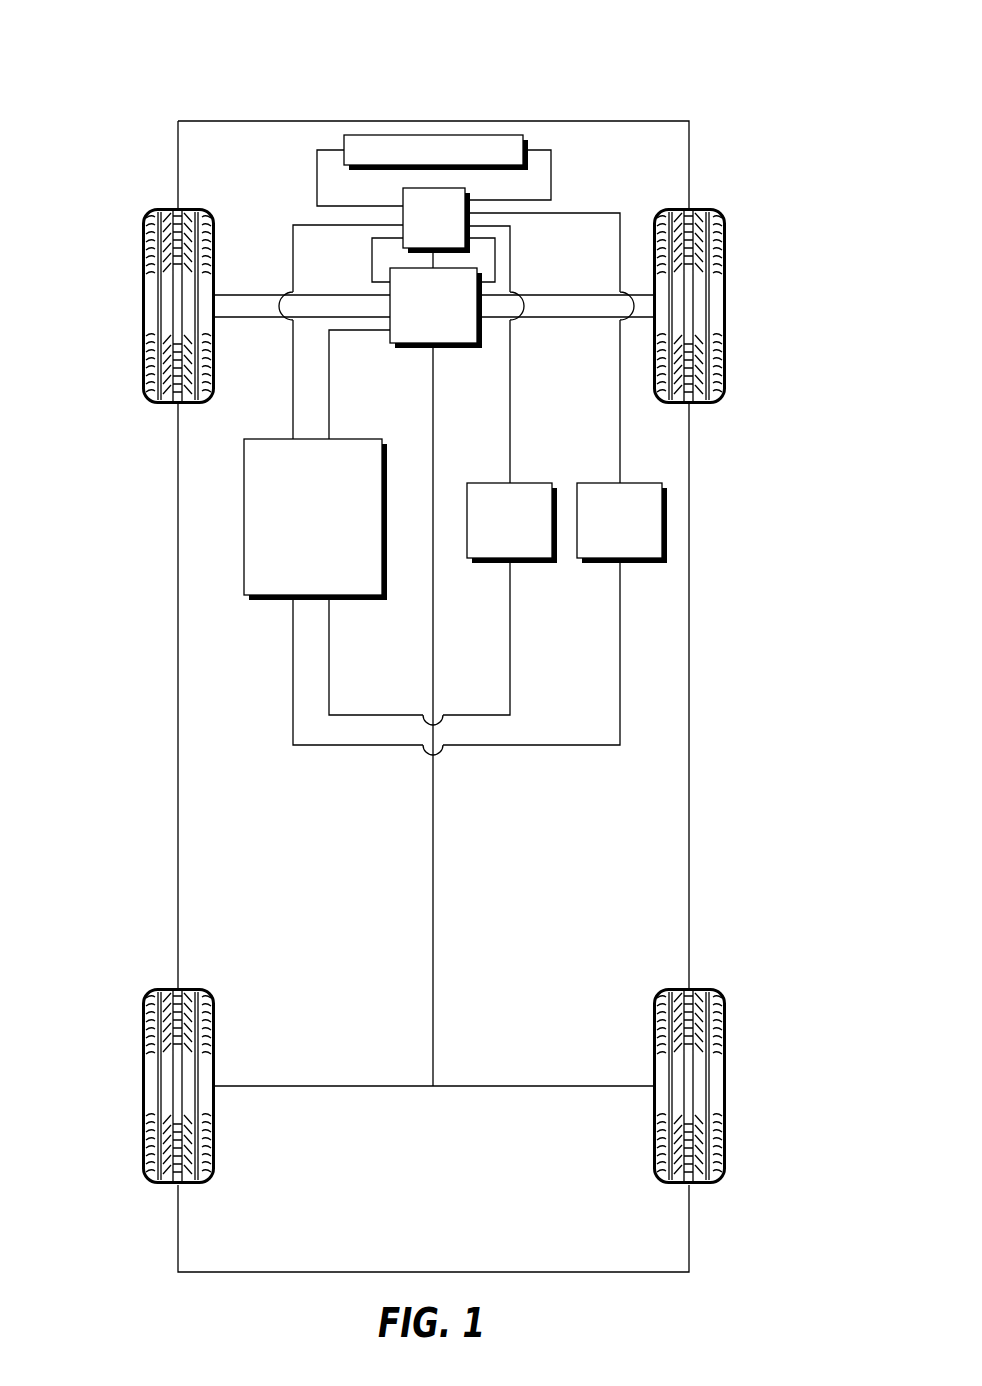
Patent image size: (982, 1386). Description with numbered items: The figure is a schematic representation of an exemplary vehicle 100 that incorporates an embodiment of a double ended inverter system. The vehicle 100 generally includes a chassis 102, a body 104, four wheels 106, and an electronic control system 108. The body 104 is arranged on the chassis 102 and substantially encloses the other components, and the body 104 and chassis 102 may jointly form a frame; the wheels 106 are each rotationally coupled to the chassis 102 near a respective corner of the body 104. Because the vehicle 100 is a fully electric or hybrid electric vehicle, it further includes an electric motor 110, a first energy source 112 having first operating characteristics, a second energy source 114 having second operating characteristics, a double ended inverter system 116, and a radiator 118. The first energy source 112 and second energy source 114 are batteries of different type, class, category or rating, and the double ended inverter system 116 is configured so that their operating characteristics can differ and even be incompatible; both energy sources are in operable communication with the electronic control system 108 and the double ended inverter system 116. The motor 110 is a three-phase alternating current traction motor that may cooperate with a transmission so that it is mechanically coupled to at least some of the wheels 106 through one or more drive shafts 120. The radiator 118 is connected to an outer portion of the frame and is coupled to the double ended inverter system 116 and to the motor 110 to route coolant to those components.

The vehicle 100 is at (708, 40).
The chassis 102 is at (430, 955).
The body 104 is at (192, 518).
The wheels 106 is at (142, 272).
The electronic control system 108 is at (290, 530).
The electric motor 110 is at (410, 318).
The first energy source 112 is at (487, 533).
The second energy source 114 is at (597, 533).
The double ended inverter system 116 is at (412, 230).
The radiator 118 is at (385, 133).
The drive shafts 120 is at (277, 307).